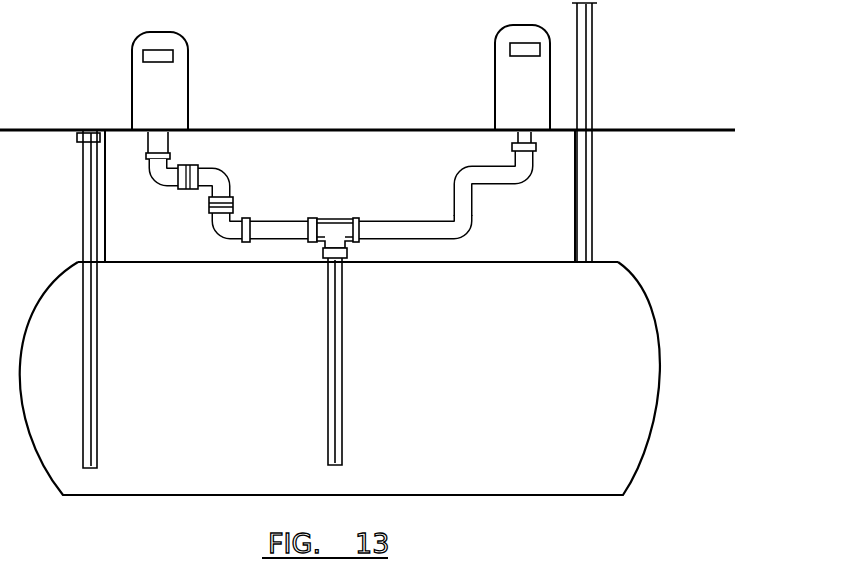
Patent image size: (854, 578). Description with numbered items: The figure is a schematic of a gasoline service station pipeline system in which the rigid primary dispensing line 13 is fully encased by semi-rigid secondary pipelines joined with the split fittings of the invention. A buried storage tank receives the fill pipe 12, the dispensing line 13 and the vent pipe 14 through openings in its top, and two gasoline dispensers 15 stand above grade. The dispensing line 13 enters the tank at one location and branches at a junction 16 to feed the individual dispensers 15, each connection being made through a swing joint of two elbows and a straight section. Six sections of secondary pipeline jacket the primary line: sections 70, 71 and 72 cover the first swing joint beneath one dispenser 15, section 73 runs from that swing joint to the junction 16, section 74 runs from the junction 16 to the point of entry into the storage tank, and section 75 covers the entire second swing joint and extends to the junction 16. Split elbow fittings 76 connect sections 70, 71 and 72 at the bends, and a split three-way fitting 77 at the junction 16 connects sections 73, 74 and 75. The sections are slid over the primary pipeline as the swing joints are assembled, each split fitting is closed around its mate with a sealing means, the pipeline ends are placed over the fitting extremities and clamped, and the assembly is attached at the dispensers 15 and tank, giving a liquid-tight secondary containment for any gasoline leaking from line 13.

The fill pipe 12 is at (86, 327).
The dispensing line 13 is at (332, 327).
The vent pipe 14 is at (578, 220).
The gasoline dispensers 15 is at (142, 85).
The junction 16 is at (358, 207).
The secondary pipeline section 70 is at (150, 148).
The secondary pipeline section 71 is at (192, 166).
The secondary pipeline section 72 is at (210, 207).
The secondary pipeline section 73 is at (263, 228).
The secondary pipeline section 74 is at (323, 253).
The secondary pipeline section 75 is at (473, 194).
The split elbow fittings 76 is at (240, 171).
The split three-way fittings 77 is at (331, 220).